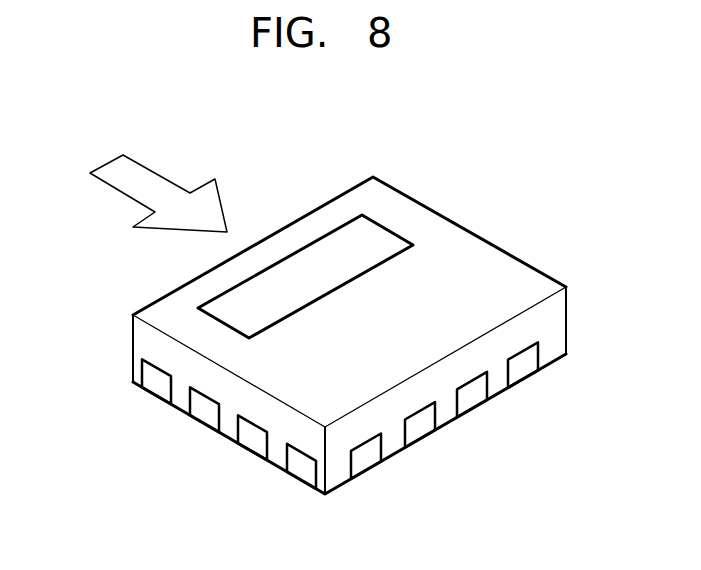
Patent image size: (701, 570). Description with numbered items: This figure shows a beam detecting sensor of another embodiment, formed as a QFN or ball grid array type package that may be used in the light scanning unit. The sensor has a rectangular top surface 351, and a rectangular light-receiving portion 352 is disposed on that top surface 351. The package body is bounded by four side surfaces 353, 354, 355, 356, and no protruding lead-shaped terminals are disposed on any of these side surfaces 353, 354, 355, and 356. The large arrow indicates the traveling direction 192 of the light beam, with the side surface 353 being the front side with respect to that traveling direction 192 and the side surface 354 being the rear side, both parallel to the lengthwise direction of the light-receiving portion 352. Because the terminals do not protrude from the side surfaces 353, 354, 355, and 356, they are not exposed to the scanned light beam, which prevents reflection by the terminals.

The traveling direction 192 is at (123, 185).
The top surface 351 is at (452, 245).
The light-receiving portion 352 is at (378, 232).
The side surface 353 is at (132, 345).
The side surface 354 is at (490, 350).
The side surface 355 is at (188, 367).
The side surface 356 is at (566, 317).